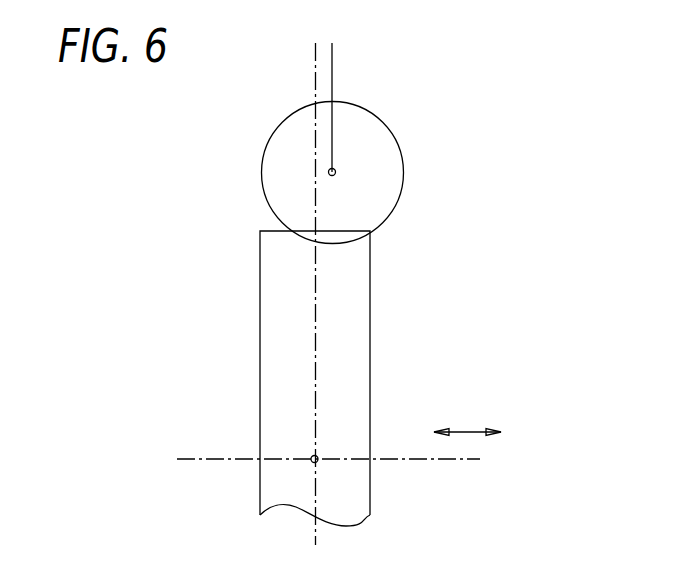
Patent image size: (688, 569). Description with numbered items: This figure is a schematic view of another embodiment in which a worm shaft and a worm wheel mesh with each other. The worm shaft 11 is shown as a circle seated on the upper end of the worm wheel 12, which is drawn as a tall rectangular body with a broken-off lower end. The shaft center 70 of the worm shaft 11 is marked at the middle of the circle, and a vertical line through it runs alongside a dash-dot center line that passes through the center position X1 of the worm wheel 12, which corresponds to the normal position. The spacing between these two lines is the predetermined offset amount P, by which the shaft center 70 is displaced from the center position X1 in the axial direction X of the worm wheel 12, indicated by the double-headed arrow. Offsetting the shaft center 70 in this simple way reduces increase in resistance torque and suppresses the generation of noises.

The worm shaft 11 is at (392, 130).
The shaft center 70 is at (336, 172).
The worm wheel 12 is at (371, 317).
The predetermined offset amount P is at (282, 56).
The center position X1 is at (313, 456).
The axial direction X is at (465, 432).